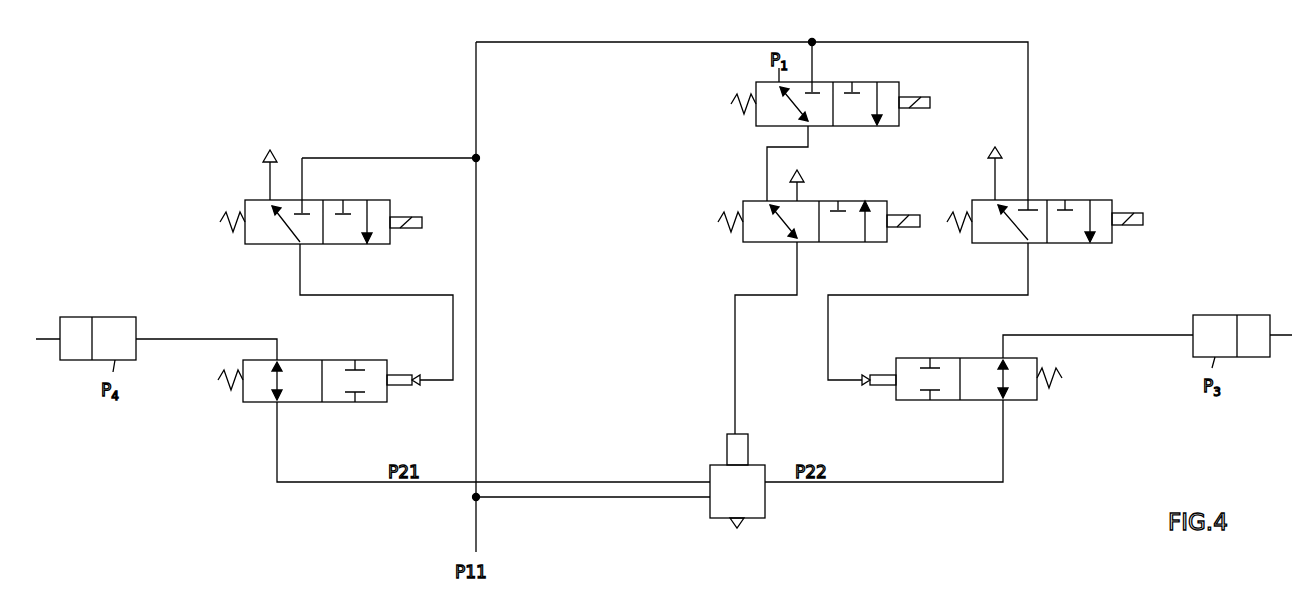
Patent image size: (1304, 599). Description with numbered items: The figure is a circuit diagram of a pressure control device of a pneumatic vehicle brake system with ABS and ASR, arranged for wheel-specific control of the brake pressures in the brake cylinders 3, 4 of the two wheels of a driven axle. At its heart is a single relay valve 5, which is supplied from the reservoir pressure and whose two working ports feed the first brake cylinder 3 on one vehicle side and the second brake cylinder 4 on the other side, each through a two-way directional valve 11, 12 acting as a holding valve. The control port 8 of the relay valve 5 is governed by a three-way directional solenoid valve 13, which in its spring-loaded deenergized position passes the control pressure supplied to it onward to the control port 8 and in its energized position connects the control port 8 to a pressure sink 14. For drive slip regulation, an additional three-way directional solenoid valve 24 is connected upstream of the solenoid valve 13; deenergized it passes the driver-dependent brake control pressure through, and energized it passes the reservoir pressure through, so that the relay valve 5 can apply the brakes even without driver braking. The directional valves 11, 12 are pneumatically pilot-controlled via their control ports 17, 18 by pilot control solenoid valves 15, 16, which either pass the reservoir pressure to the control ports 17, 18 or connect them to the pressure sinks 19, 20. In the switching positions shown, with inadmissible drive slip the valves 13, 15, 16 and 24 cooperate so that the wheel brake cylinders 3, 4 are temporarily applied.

The first brake cylinder 3 is at (1213, 322).
The second brake cylinder 4 is at (117, 322).
The single relay valve 5 is at (712, 470).
The control port 8 is at (739, 433).
The 2/2 directional valve 11 is at (976, 362).
The 2/2 directional valve 12 is at (308, 397).
The 3/2 directional solenoid valve 13 is at (758, 238).
The pressure sink 14 is at (805, 178).
The 3/2 directional pilot control solenoid valve 15 is at (1080, 201).
The 3/2 directional pilot control solenoid valve 16 is at (272, 236).
The control port 17 is at (866, 375).
The control port 18 is at (421, 374).
The pressure sink 19 is at (996, 150).
The pressure sink 20 is at (275, 152).
The additional 3/2 directional solenoid valve 24 is at (864, 90).